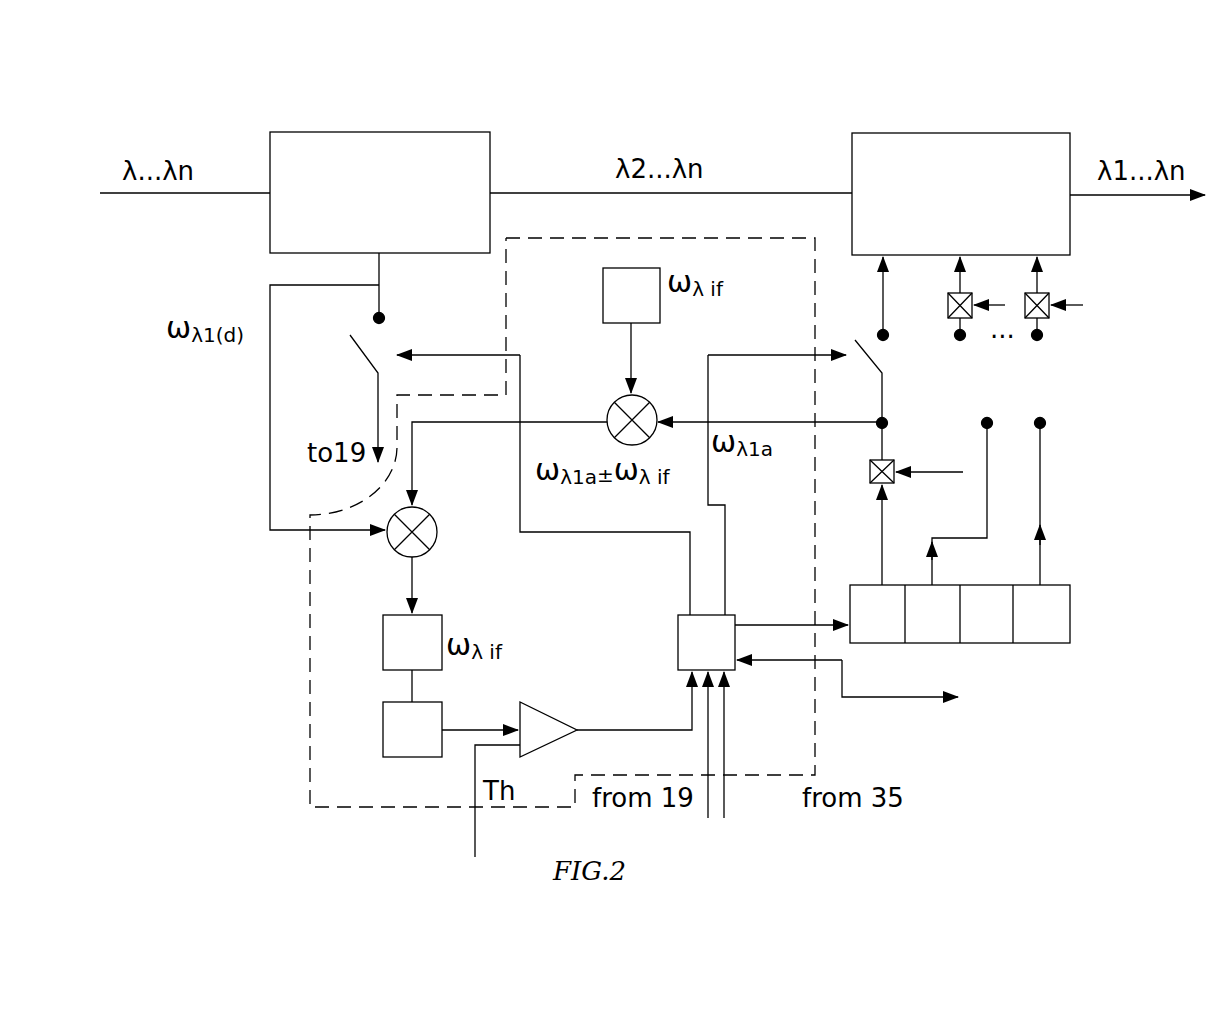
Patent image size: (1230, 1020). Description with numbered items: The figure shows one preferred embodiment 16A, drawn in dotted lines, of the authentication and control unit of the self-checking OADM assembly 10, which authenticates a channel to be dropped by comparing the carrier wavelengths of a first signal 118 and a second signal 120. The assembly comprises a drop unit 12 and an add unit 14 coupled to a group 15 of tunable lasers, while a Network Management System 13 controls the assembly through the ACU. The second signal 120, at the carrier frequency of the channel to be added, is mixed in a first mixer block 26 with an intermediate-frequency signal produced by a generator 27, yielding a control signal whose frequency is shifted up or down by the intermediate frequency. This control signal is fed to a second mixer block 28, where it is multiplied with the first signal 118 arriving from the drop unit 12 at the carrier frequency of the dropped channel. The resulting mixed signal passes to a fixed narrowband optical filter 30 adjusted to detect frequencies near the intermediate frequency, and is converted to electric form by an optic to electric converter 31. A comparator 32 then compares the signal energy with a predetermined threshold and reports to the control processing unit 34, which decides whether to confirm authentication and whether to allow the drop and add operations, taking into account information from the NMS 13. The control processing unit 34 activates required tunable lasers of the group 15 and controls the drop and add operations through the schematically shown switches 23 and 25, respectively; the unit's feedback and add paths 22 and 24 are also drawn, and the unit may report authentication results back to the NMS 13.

The OADM assembly 10 is at (611, 107).
The drop unit 12 is at (380, 132).
The add unit 14 is at (960, 133).
The Network Management System 13 is at (900, 686).
The group of tunable lasers 15 is at (1060, 568).
The authentication and control unit 16A is at (310, 787).
The feedback path 22 is at (445, 355).
The switch 23 is at (356, 357).
The add path 24 is at (722, 355).
The switch 25 is at (890, 358).
The first mixer block 26 is at (615, 400).
The generator 27 is at (603, 300).
The second mixer block 28 is at (421, 508).
The narrowband optical filter 30 is at (383, 642).
The optic to electric converter 31 is at (383, 735).
The comparator 32 is at (545, 702).
The control processing unit 34 is at (678, 645).
The first signal 118 is at (270, 452).
The second signal 120 is at (885, 442).